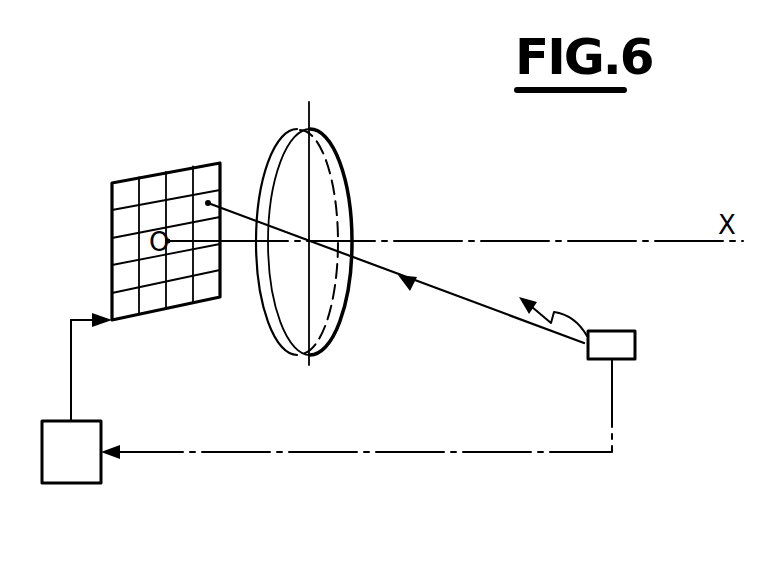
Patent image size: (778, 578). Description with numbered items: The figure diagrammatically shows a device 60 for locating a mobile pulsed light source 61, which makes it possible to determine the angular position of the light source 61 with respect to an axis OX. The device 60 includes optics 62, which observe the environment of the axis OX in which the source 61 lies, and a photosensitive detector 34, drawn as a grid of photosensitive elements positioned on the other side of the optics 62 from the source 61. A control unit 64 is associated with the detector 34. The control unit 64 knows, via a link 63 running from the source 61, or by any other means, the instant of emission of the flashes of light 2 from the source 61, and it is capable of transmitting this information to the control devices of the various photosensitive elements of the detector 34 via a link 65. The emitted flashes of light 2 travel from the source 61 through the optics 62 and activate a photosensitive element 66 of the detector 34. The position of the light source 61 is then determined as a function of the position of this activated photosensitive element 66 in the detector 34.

The device for locating a mobile pulsed light source 60 is at (96, 172).
The photosensitive element 66 is at (212, 203).
The optics 62 is at (327, 162).
The mobile pulsed light source 61 is at (633, 347).
The flashes of light 2 is at (586, 347).
The photosensitive detector 34 is at (110, 324).
The link 65 is at (70, 365).
The control unit 64 is at (68, 470).
The link 63 is at (408, 454).